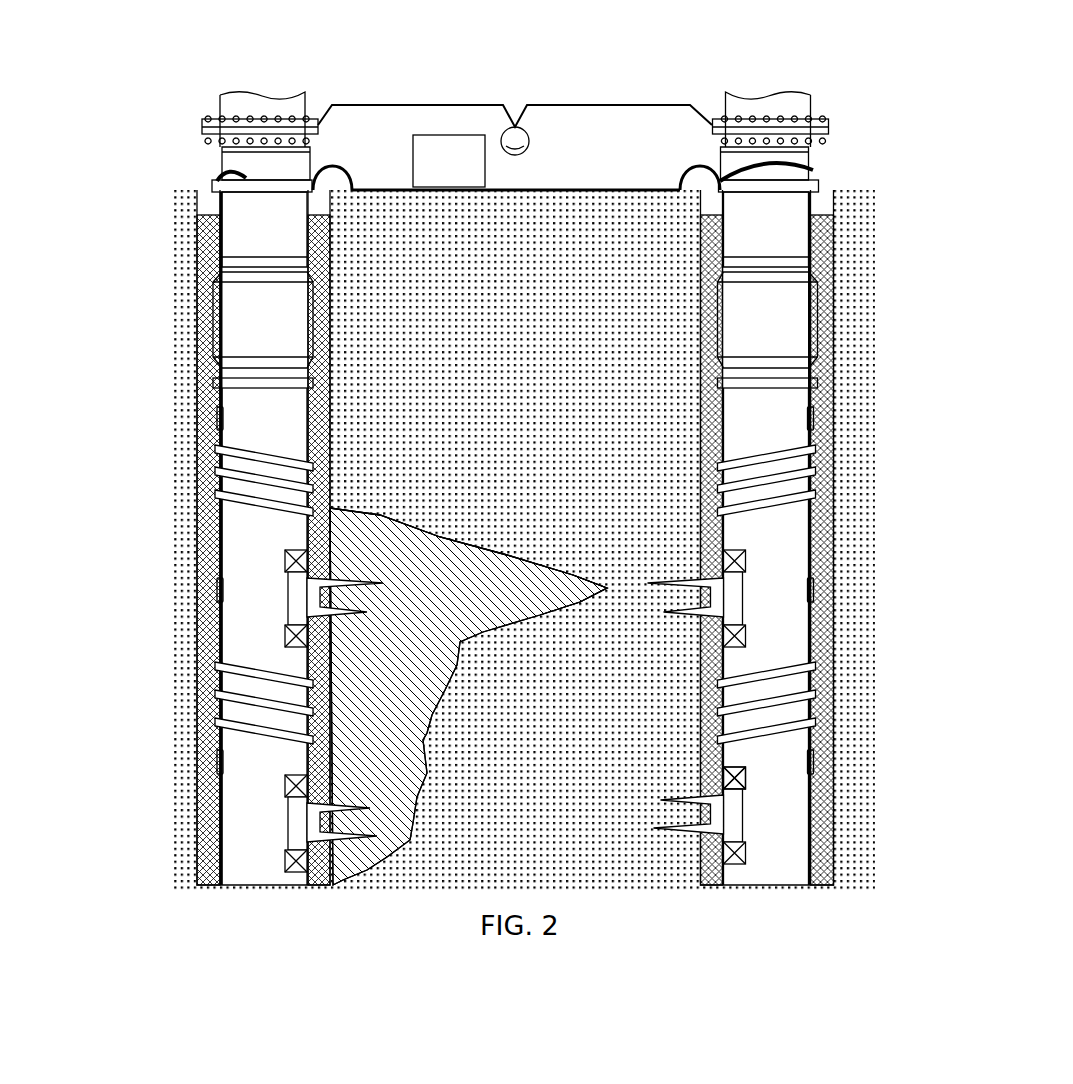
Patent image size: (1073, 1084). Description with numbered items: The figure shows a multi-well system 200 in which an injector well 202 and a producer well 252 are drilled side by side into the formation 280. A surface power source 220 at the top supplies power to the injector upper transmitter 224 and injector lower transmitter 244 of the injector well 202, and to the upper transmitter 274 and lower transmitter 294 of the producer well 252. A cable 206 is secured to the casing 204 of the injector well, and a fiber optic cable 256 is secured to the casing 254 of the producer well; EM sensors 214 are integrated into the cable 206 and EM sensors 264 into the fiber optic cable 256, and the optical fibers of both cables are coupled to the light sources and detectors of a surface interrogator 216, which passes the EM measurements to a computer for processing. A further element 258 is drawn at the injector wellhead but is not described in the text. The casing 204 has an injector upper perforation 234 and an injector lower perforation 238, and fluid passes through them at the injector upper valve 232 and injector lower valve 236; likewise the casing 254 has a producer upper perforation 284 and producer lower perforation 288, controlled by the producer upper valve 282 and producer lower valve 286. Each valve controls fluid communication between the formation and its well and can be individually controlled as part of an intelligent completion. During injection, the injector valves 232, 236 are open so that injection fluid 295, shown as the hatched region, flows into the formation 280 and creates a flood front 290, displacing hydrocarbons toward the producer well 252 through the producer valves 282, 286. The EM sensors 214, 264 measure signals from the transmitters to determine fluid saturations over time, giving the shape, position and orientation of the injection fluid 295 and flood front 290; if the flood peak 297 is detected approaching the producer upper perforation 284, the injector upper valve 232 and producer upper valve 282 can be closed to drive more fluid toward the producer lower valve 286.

The multi-well system 200 is at (986, 169).
The injector well 202 is at (330, 266).
The casing 204 is at (287, 213).
The cable 206 is at (343, 178).
The EM sensors 214 is at (217, 420).
The surface interrogator 216 is at (469, 173).
The surface power source 220 is at (530, 138).
The injector upper transmitter 224 is at (230, 480).
The injector upper valve 232 is at (320, 556).
The injector upper perforation 234 is at (384, 580).
The injector lower valve 236 is at (320, 782).
The injector lower perforation 238 is at (376, 816).
The injector lower transmitter 244 is at (230, 697).
The producer well 252 is at (700, 265).
The casing 254 is at (790, 232).
The fiber optic cable 256 is at (683, 168).
The cable 258 is at (244, 184).
The EM sensors 264 is at (813, 420).
The injector upper transmitter 274 is at (813, 494).
The formation 280 is at (535, 278).
The producer upper valve 282 is at (705, 550).
The producer upper perforation 284 is at (683, 583).
The producer lower valve 286 is at (743, 782).
The producer lower perforation 288 is at (680, 808).
The flood front 290 is at (450, 537).
The injector lower transmitter 294 is at (815, 710).
The injection fluid 295 is at (490, 605).
The flood peak 297 is at (611, 592).